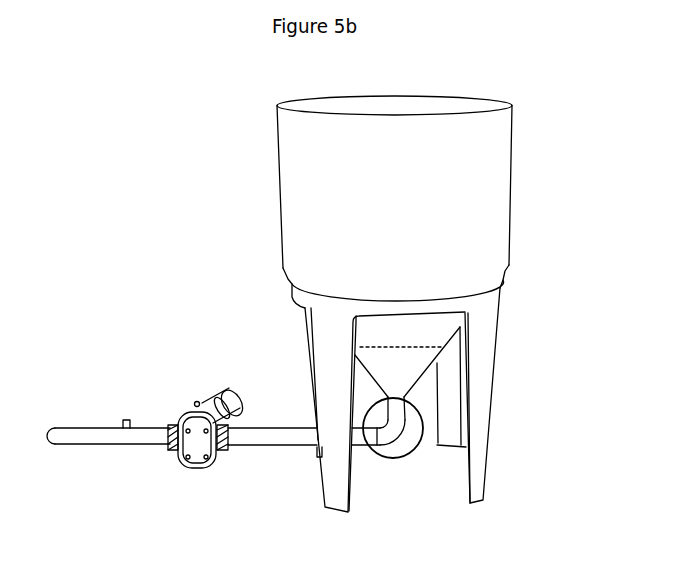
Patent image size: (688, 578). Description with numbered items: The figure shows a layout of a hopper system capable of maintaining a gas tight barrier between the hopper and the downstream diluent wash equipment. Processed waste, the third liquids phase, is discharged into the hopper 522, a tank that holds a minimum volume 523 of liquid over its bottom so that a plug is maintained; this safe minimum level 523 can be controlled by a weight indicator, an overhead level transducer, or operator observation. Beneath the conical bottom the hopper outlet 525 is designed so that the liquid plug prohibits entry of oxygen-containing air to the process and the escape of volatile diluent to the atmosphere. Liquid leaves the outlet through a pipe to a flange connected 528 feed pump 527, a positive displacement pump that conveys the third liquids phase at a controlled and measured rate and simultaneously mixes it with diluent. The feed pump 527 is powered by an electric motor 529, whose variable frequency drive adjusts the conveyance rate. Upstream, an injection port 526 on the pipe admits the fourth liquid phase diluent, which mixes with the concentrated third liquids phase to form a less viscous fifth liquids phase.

The hopper 522 is at (513, 170).
The minimum volume 523 is at (443, 348).
The hopper outlet 525 is at (423, 432).
The injection port 526 is at (127, 420).
The feed pump 527 is at (188, 408).
The flange connection 528 is at (224, 450).
The electric motor 529 is at (222, 391).